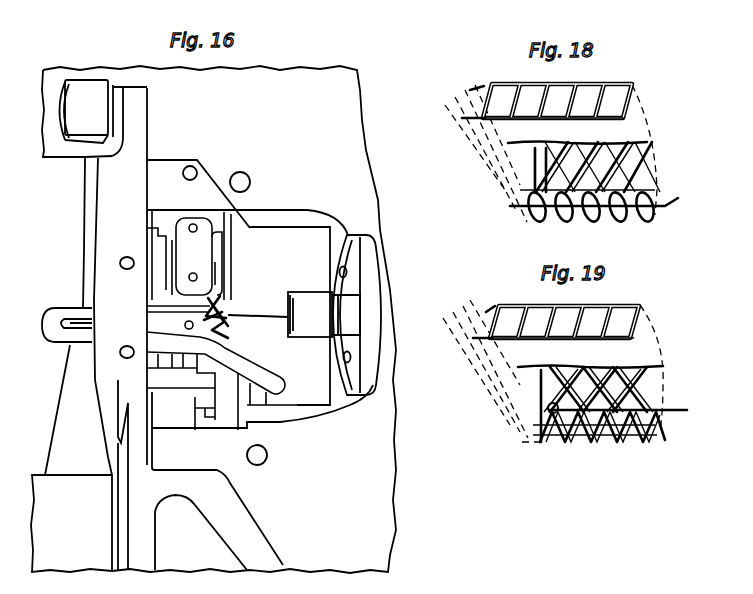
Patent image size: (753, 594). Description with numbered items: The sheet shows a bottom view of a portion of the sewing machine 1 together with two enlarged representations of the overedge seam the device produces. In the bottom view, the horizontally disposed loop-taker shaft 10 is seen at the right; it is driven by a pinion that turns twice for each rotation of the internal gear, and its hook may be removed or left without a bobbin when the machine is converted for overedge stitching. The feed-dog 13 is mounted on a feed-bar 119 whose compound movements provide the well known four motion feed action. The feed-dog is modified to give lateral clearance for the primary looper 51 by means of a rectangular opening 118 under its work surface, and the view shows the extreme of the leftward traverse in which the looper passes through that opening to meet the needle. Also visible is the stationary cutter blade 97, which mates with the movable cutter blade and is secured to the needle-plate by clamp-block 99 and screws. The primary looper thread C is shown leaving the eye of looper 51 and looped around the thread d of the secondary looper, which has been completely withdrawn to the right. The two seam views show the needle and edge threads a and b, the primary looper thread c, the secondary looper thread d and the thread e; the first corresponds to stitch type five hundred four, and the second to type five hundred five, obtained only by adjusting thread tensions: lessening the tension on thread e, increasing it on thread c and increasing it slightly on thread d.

In FIG. 16, the machine frame plate 1 is at (343, 108).
In FIG. 16, the loop-taker shaft 10 is at (300, 292).
In FIG. 16, the feed-dog 13 is at (153, 235).
In FIG. 16, the primary looper 51 is at (48, 333).
In FIG. 16, the stationary cutter blade 97 is at (222, 247).
In FIG. 16, the clamp-block 99 is at (247, 282).
In FIG. 16, the rectangular opening 118 is at (143, 298).
In FIG. 16, the feed-bar 119 is at (117, 383).
In FIG. 16, the primary looper thread C is at (46, 311).
In FIG. 16, the secondary looper thread d is at (241, 314).
In FIG. 18, the secondary looper thread d is at (530, 212).
In FIG. 19, the secondary looper thread d is at (530, 416).
In FIG. 18, the needle thread chain a is at (632, 84).
In FIG. 19, the needle thread chain a is at (639, 305).
In FIG. 18, the bottom chain thread b is at (625, 111).
In FIG. 19, the bottom chain thread b is at (634, 331).
In FIG. 18, the primary looper thread c is at (527, 188).
In FIG. 19, the primary looper thread c is at (657, 423).
In FIG. 18, the thread e is at (637, 137).
In FIG. 19, the thread e is at (537, 367).